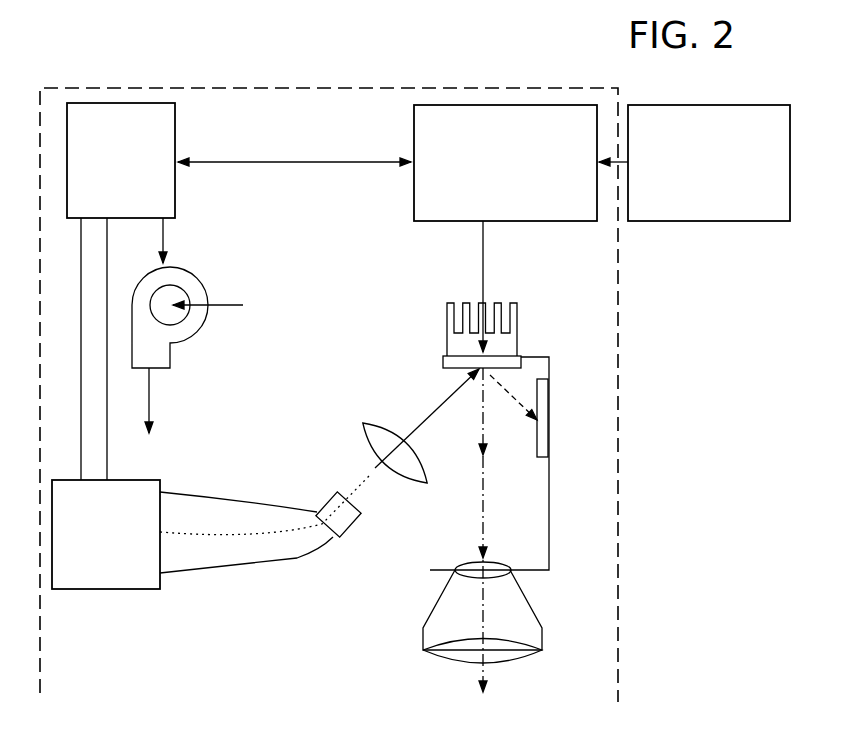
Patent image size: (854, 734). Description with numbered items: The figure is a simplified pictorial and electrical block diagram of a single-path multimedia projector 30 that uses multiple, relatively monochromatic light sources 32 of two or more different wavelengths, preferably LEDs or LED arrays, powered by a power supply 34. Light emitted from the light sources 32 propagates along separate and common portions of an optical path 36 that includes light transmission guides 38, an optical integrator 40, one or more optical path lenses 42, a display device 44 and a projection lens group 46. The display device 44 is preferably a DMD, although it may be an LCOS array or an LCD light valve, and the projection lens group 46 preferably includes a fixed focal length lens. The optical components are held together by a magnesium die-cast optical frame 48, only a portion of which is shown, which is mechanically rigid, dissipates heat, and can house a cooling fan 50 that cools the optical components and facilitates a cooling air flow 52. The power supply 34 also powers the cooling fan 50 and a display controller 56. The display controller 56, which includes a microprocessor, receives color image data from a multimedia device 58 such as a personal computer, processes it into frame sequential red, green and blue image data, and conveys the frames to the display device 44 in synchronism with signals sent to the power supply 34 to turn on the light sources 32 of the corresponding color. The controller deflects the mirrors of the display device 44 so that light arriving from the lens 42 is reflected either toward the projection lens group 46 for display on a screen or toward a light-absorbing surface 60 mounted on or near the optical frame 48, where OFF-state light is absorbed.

The multimedia projector 30 is at (620, 447).
The light sources 32 is at (143, 480).
The power supply 34 is at (165, 118).
The optical path 36 is at (422, 425).
The light transmission guides 38 is at (240, 507).
The optical integrator 40 is at (325, 493).
The optical path lens 42 is at (363, 425).
The display device 44 is at (443, 362).
The projection lens group 46 is at (517, 600).
The optical frame 48 is at (552, 500).
The cooling fan 50 is at (182, 275).
The cooling air flow 52 is at (149, 403).
The display controller 56 is at (519, 222).
The multimedia device 58 is at (697, 222).
The light-absorbing surface 60 is at (544, 402).